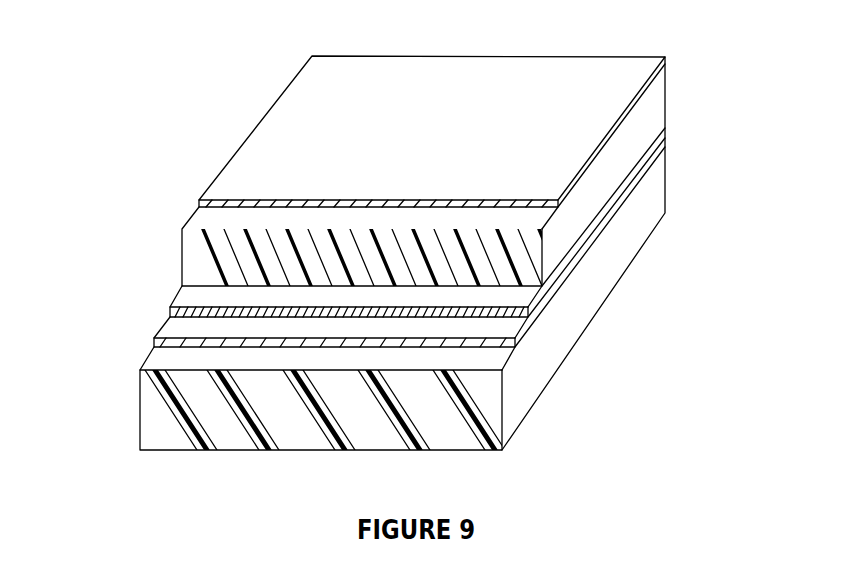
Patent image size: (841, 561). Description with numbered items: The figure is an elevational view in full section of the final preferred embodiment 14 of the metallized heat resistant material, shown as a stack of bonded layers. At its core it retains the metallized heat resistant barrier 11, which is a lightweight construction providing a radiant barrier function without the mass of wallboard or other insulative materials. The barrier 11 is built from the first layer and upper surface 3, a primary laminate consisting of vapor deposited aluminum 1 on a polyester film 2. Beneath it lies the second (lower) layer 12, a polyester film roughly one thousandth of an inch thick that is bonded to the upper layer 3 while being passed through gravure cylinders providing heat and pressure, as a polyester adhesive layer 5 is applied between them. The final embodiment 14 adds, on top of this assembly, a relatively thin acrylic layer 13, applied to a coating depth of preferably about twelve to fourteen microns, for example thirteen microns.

The vapor deposited aluminum 1 is at (633, 175).
The polyester film 2 is at (637, 140).
The first layer and upper surface 3 is at (152, 237).
The polyester adhesive layer 5 is at (587, 250).
The metallized heat resistant barrier 11 is at (76, 239).
The second (lower) layer 12 is at (551, 361).
The acrylic layer 13 is at (637, 102).
The final preferred embodiment 14 is at (134, 185).